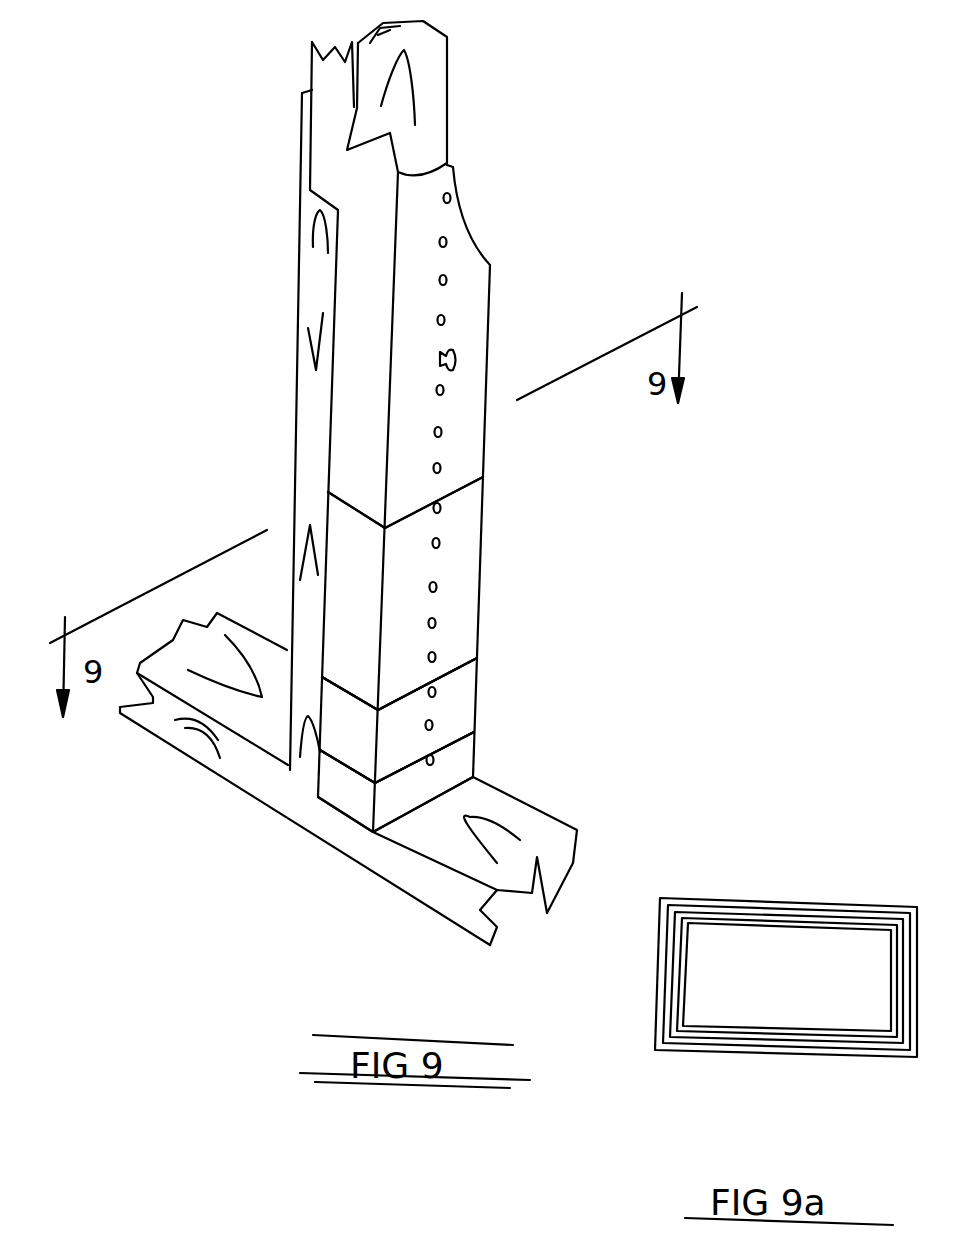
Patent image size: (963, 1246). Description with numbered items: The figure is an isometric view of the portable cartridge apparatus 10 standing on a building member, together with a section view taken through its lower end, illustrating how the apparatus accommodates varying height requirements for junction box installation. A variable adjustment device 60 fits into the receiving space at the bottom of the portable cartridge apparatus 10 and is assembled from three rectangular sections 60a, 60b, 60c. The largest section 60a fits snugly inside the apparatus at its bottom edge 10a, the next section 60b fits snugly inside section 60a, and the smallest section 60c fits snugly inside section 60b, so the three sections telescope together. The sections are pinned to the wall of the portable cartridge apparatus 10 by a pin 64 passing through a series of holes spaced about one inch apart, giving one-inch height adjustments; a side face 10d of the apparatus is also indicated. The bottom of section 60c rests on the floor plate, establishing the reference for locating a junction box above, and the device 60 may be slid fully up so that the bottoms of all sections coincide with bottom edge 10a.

In FIG. 9, the portable cartridge apparatus 10 is at (488, 235).
In FIG. 9, the bottom edge 10a is at (470, 495).
In FIG. 9, the post side face 10d is at (343, 428).
In FIG. 9, the variable adjustment device 60 is at (482, 553).
In FIG. 9, the largest section 60a is at (480, 613).
In FIG. 9A, the largest section 60a is at (698, 1053).
In FIG. 9, the next section 60b is at (478, 693).
In FIG. 9A, the next section 60b is at (765, 1040).
In FIG. 9, the smallest section 60c is at (475, 755).
In FIG. 9A, the smallest section 60c is at (712, 1023).
In FIG. 9, the pin 64 is at (457, 353).